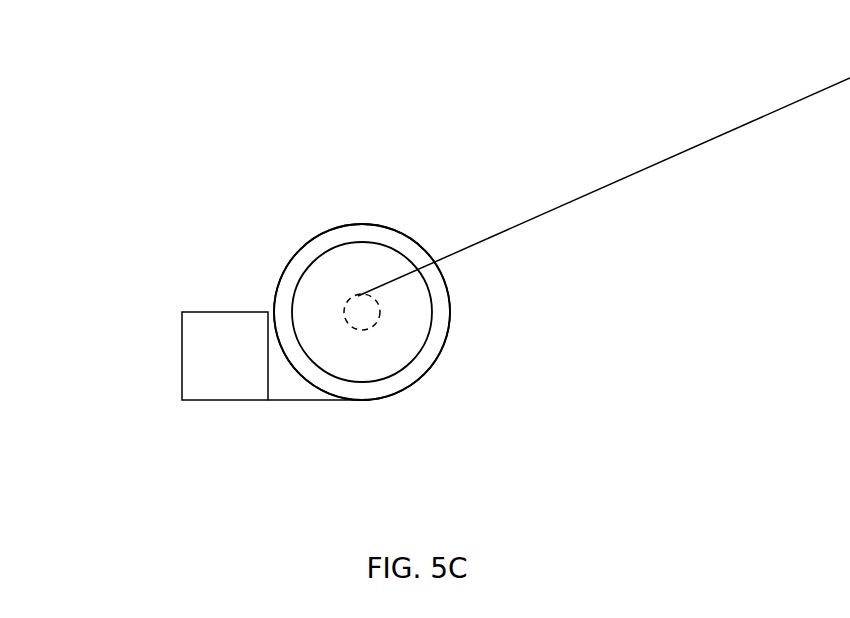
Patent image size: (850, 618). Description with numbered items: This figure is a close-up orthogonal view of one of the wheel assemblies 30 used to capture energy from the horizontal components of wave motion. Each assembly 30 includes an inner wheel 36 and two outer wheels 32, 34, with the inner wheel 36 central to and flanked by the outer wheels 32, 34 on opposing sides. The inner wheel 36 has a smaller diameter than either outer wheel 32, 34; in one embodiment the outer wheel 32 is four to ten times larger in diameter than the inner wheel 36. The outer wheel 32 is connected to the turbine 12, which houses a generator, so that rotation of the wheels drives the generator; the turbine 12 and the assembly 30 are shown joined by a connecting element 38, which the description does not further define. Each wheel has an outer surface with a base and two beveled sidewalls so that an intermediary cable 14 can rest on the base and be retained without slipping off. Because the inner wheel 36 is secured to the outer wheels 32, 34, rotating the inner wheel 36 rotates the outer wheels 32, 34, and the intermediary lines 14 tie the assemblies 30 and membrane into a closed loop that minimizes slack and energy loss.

The turbine 12 is at (195, 312).
The intermediary cable 14 is at (633, 175).
The assembly 30 is at (338, 192).
The outer wheel 32 is at (450, 317).
The outer wheel 34 is at (420, 350).
The inner wheel 36 is at (360, 328).
The support plate 38 is at (290, 400).